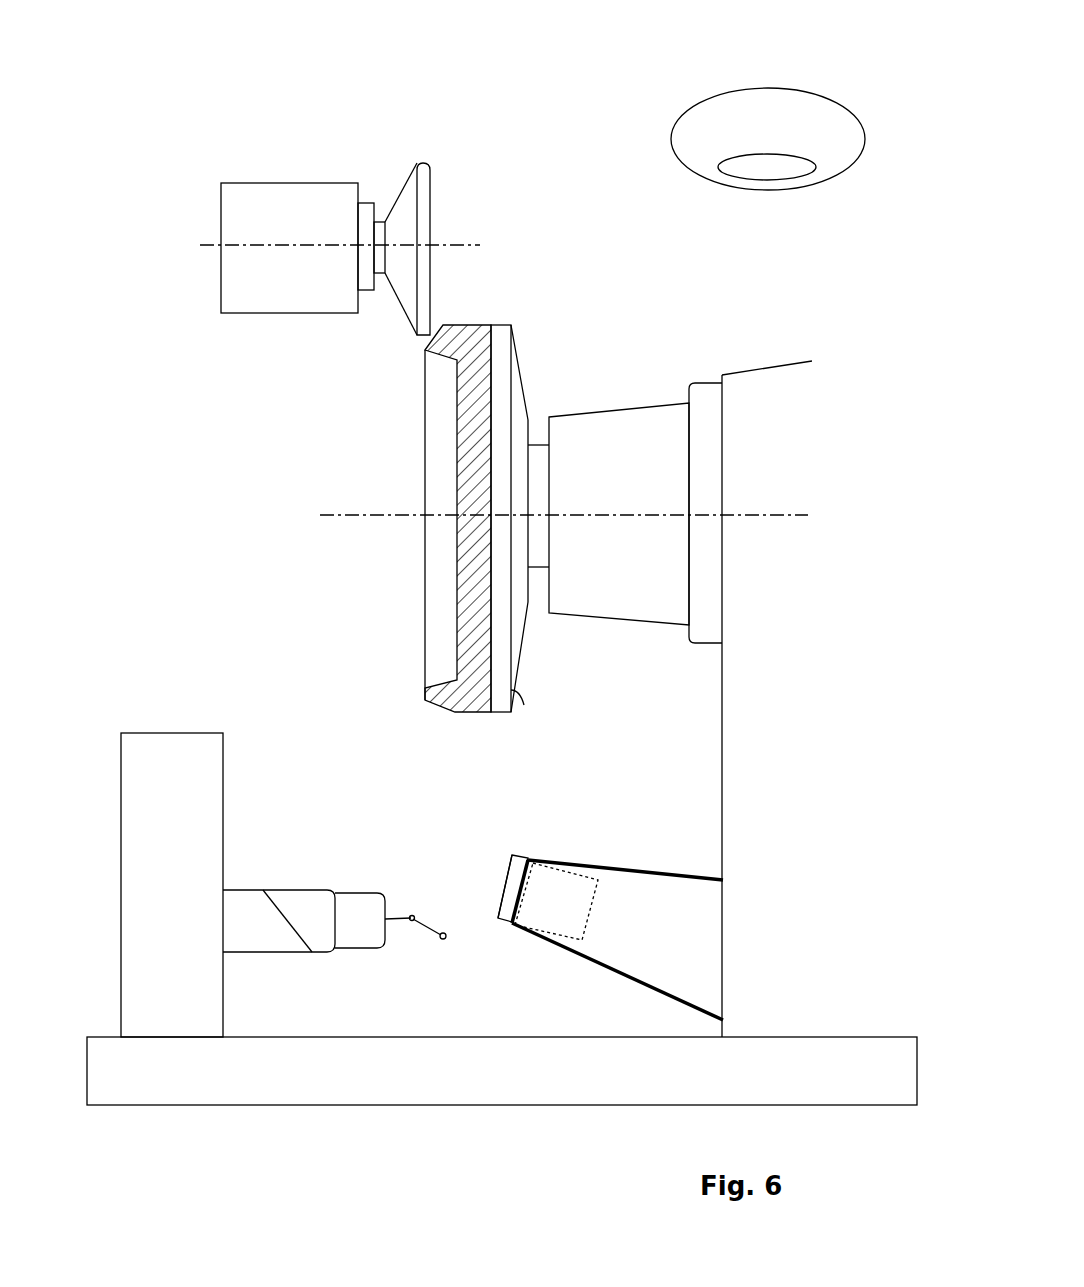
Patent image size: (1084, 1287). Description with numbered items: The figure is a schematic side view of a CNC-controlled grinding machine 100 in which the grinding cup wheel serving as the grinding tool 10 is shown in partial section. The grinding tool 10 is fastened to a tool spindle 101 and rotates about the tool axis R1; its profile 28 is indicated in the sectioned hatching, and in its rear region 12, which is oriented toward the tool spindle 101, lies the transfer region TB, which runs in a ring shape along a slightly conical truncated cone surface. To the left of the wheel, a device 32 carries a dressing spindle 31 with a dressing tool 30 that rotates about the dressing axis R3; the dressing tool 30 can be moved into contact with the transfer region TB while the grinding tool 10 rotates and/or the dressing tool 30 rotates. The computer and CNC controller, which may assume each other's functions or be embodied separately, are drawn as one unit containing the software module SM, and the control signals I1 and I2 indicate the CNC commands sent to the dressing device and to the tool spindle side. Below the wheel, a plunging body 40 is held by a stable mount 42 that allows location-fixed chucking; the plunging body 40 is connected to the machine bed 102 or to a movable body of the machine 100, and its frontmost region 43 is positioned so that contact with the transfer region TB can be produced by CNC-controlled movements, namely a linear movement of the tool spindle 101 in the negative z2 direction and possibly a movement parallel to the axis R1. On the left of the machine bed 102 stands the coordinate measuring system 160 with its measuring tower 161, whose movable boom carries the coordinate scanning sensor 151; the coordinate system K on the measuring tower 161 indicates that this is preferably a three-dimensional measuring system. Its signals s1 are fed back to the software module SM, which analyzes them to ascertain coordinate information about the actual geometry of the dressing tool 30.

The grinding machine 100 is at (873, 21).
The machine bed 102 is at (482, 1084).
The software module SM is at (767, 167).
The CNC control signal I1 is at (761, 87).
The CNC control signal I2 is at (768, 362).
The signals of the coordinate measuring system s1 is at (175, 1000).
The device 32 is at (267, 296).
The dressing spindle 31 is at (373, 289).
The dressing tool 30 is at (431, 183).
The dressing axis R3 is at (323, 246).
The grinding tool 10 is at (499, 306).
The profile 28 is at (428, 701).
The rear region 12 is at (514, 706).
The transfer region TB is at (519, 325).
The tool axis R1 is at (583, 516).
The tool spindle 101 is at (626, 611).
The z2 direction z2 is at (787, 548).
The coordinate measuring system 160 is at (214, 708).
The measuring tower 161 is at (285, 863).
The coordinate system K is at (152, 862).
The coordinate scanning sensor 151 is at (437, 939).
The plunging body 40 is at (501, 918).
The stable mount 42 is at (618, 953).
The frontmost region 43 is at (497, 878).